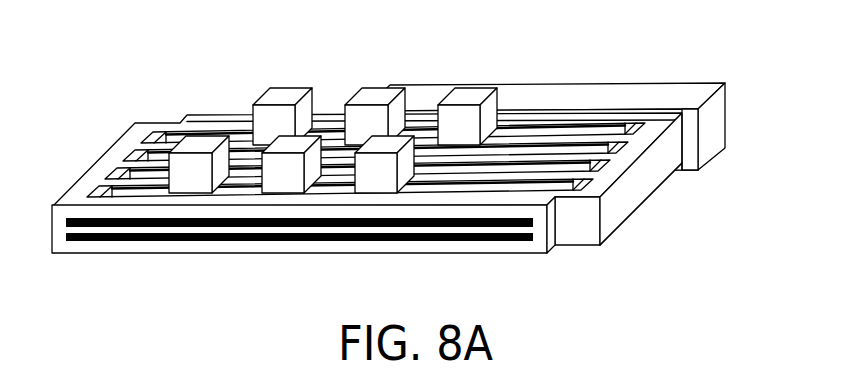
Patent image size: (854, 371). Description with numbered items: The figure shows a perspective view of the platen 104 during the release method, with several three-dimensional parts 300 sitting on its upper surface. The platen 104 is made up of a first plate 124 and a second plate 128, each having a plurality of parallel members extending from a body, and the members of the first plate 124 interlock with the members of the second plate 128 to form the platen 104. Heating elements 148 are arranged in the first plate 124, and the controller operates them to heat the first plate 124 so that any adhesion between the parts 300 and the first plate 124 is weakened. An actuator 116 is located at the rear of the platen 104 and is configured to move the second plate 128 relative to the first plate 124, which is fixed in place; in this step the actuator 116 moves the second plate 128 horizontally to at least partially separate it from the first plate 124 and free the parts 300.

The platen 104 is at (372, 183).
The actuator 116 is at (583, 92).
The first plate 124 is at (61, 238).
The second plate 128 is at (578, 232).
The heating elements 148 is at (139, 222).
The parts 300 is at (458, 93).